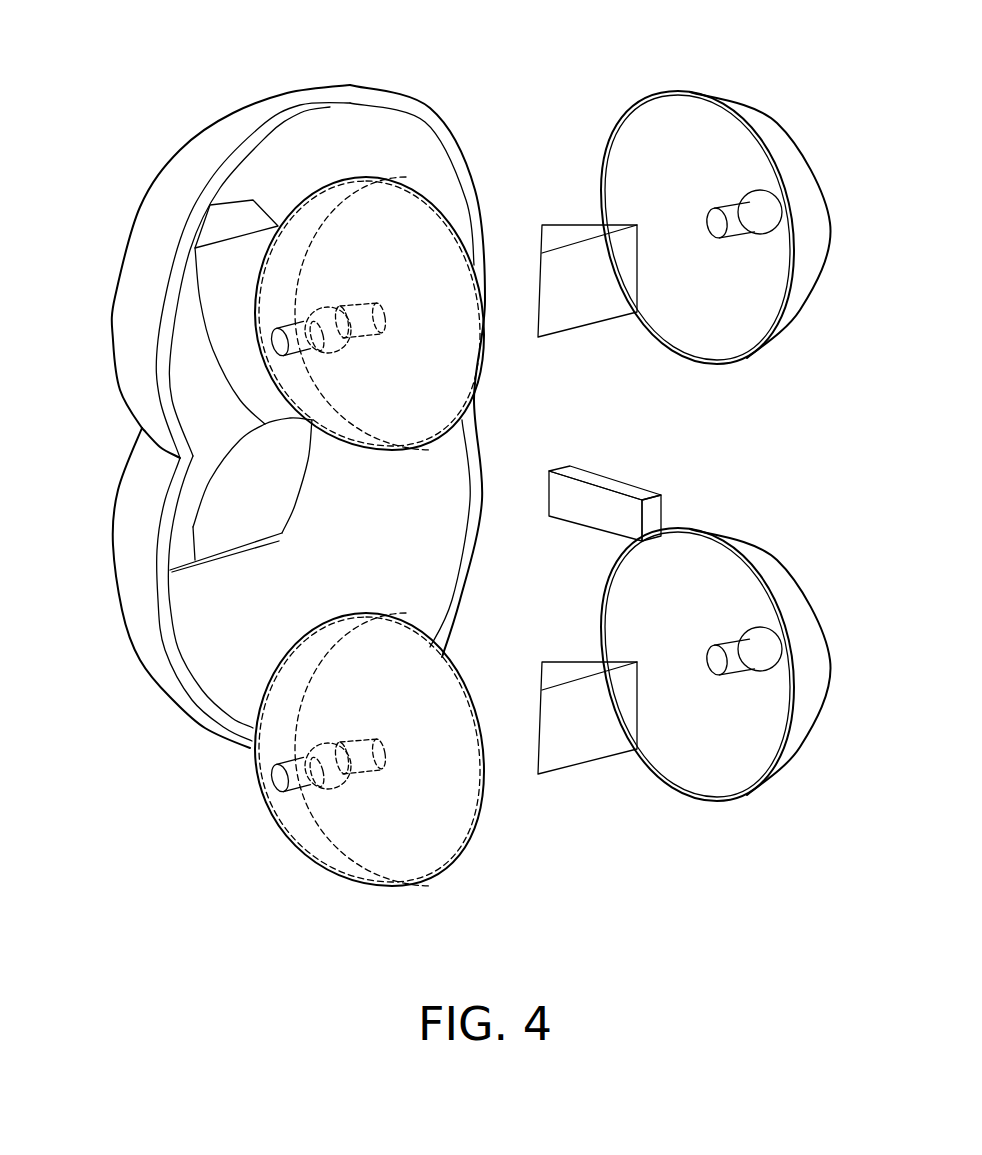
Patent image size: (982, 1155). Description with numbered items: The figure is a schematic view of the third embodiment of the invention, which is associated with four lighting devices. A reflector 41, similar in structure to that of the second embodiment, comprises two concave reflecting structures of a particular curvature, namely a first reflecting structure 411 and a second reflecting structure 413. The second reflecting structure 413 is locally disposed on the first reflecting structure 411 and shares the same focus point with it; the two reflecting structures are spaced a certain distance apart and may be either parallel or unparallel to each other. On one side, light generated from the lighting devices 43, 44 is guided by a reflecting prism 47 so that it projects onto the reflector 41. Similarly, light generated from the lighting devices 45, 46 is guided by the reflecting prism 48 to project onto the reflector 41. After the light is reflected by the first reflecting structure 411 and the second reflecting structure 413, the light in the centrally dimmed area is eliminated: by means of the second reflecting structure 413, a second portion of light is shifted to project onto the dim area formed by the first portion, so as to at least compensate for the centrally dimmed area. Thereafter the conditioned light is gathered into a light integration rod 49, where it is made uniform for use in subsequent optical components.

The reflector 41 is at (176, 101).
The first reflecting structure 411 is at (125, 620).
The second reflecting structure 413 is at (245, 487).
The lighting device 43 is at (440, 373).
The lighting device 44 is at (810, 300).
The lighting device 45 is at (428, 847).
The lighting device 46 is at (813, 734).
The reflecting prism 47 is at (590, 327).
The reflecting prism 48 is at (589, 757).
The light integration rod 49 is at (644, 493).